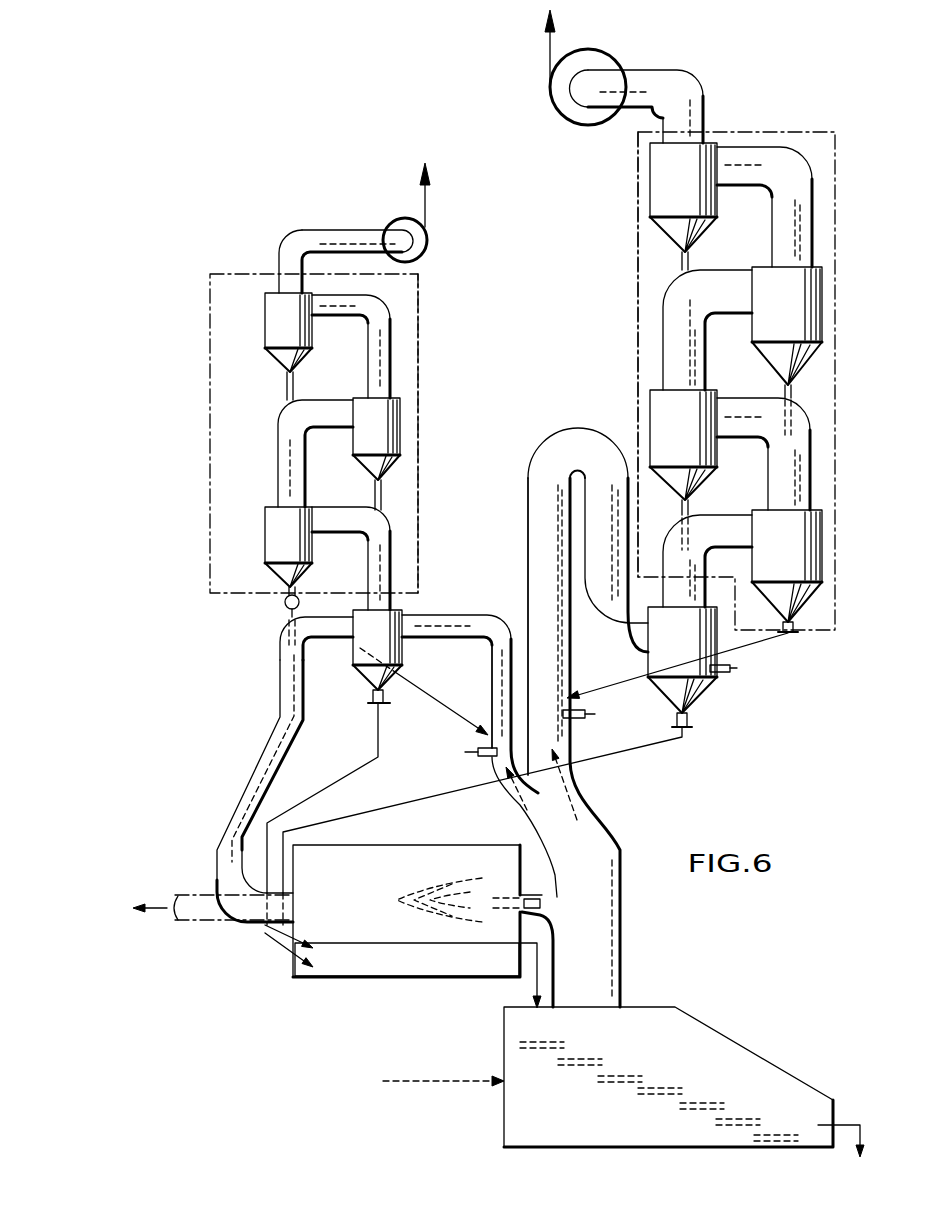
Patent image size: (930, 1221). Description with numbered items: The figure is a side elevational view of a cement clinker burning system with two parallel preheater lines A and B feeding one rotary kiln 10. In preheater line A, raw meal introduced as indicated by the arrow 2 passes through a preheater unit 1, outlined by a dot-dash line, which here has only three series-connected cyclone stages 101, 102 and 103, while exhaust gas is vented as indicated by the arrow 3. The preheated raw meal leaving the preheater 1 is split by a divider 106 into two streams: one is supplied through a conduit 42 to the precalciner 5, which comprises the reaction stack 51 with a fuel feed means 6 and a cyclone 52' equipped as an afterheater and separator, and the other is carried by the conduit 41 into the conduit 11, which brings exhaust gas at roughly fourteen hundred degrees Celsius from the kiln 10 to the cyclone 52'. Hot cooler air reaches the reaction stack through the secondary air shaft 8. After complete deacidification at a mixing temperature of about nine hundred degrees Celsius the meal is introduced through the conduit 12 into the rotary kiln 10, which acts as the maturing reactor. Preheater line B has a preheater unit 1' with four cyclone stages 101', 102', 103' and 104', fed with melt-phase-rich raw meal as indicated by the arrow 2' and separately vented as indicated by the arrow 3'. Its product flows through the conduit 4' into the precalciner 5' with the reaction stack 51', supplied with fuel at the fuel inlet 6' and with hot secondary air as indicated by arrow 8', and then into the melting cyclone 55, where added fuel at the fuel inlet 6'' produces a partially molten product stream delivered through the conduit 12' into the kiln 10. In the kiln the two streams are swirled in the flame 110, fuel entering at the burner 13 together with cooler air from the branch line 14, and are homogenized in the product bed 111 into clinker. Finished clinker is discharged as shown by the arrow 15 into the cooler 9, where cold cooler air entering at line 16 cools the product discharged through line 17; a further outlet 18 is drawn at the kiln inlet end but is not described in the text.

The preheater unit 1 is at (292, 433).
The preheater line A is at (423, 303).
The raw meal inlet arrow 2 is at (361, 338).
The exhaust gas arrow 3 is at (371, 228).
The precalciner 5 is at (479, 721).
The fuel feed means 6 is at (470, 767).
The secondary air shaft 8 is at (496, 799).
The cooler 9 is at (565, 1113).
The rotary kiln 10 is at (311, 888).
The conduit 11 is at (222, 843).
The conduit 12 is at (322, 814).
The burner 13 is at (530, 900).
The branch line 14 is at (545, 914).
The clinker discharge arrow 15 is at (537, 982).
The cooler air line 16 is at (436, 1082).
The final product line 17 is at (846, 1123).
The secondary outlet 18 is at (208, 915).
The conduit 41 is at (285, 636).
The conduit 42 is at (430, 697).
The reaction stack 51 is at (475, 696).
The cyclone 52' is at (360, 656).
The melting cyclone 55 is at (698, 700).
The cyclone stage 101 is at (268, 551).
The cyclone stage 102 is at (406, 454).
The cyclone stage 103 is at (271, 346).
The divider 106 is at (283, 603).
The flame 110 is at (410, 886).
The product bed 111 is at (390, 963).
The preheater unit 1' is at (751, 381).
The preheater line B is at (626, 364).
The raw meal inlet arrow 2' is at (770, 178).
The exhaust gas arrow 3' is at (607, 76).
The conduit 4' is at (682, 665).
The precalciner 5' is at (588, 717).
The fuel inlet 6' is at (580, 729).
The fuel inlet 6'' is at (736, 686).
The secondary air conduit 8' is at (586, 784).
The conduit 12' is at (492, 826).
The reaction stack 51' is at (545, 626).
The cyclone stage 101' is at (812, 567).
The cyclone stage 102' is at (648, 470).
The cyclone stage 103' is at (812, 348).
The cyclone stage 104' is at (653, 206).